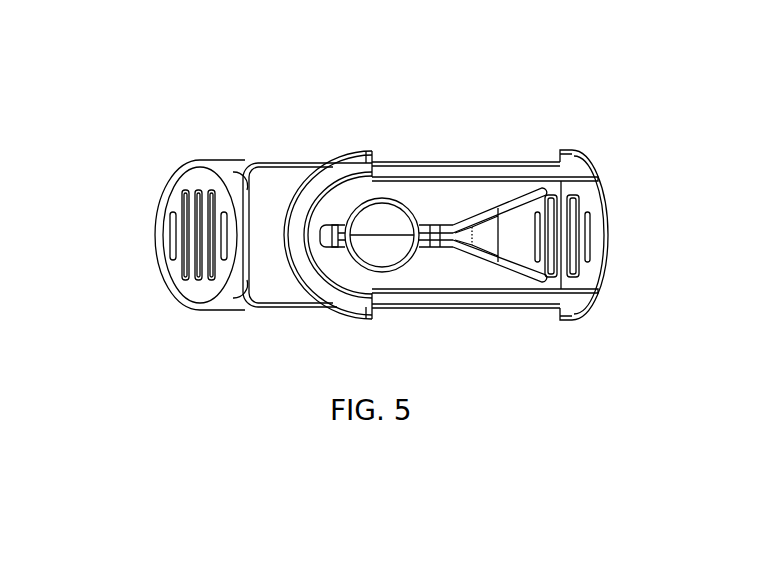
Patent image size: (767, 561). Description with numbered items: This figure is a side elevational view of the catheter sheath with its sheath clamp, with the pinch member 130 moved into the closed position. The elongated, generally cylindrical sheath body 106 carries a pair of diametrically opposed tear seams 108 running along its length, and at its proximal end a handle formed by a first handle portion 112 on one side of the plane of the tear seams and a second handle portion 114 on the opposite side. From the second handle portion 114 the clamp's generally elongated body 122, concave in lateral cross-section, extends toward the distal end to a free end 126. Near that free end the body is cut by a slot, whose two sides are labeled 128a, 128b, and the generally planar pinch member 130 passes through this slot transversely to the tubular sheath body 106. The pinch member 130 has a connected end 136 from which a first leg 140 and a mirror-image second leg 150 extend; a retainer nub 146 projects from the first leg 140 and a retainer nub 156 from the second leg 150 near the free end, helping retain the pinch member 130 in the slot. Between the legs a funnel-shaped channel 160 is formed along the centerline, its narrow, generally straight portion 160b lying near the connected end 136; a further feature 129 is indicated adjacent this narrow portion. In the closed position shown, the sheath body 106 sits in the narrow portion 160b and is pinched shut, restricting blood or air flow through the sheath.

The sheath body 106 is at (418, 212).
The tear seams 108 is at (382, 193).
The first handle portion 112 is at (610, 212).
The second handle portion 114 is at (153, 232).
The body 122 is at (252, 162).
The free end 126 is at (355, 152).
The lower ring half 128a is at (305, 270).
The upper ring half 128b is at (307, 190).
The pin 129 is at (318, 232).
The pinch member 130 is at (424, 162).
The connected end 136 is at (247, 288).
The first leg 140 is at (507, 308).
The retainer nub 146 is at (590, 306).
The second leg 150 is at (525, 158).
The retainer nub 156 is at (595, 155).
The channel 160 is at (562, 150).
The narrow portion 160b is at (333, 222).